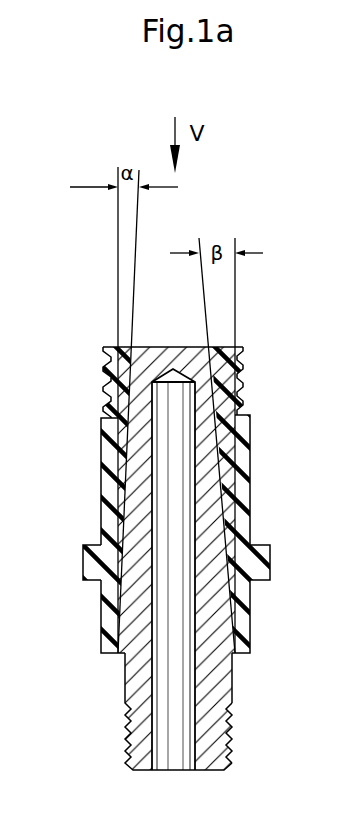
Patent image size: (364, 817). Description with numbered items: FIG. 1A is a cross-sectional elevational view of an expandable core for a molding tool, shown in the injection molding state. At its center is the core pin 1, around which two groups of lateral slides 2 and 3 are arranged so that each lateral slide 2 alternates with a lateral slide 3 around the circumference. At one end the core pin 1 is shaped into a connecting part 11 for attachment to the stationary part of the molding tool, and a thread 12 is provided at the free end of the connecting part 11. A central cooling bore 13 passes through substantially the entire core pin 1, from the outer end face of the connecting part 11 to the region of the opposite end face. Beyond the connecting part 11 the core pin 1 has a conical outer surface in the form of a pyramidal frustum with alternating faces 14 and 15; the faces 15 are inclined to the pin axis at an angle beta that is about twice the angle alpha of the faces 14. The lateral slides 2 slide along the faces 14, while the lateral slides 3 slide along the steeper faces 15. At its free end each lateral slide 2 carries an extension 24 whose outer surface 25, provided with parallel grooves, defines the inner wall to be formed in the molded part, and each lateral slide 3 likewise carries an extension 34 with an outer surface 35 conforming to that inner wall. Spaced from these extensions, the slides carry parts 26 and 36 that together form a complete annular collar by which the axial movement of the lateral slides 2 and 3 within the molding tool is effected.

The core pin 1 is at (138, 677).
The connecting part 11 is at (218, 683).
The thread 12 is at (232, 735).
The central cooling bore 13 is at (190, 607).
The face 14 is at (127, 623).
The face 15 is at (227, 530).
The lateral slide 2 is at (100, 495).
The extension 24 is at (102, 428).
The outer surface 25 is at (108, 385).
The part of annular collar 26 is at (92, 570).
The lateral slide 3 is at (243, 483).
The extension 34 is at (237, 447).
The outer surface 35 is at (240, 375).
The part of annular collar 36 is at (258, 562).